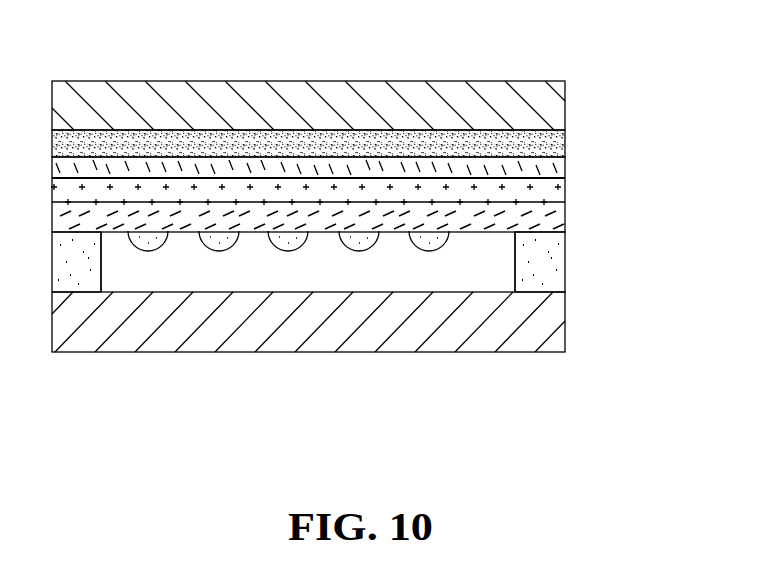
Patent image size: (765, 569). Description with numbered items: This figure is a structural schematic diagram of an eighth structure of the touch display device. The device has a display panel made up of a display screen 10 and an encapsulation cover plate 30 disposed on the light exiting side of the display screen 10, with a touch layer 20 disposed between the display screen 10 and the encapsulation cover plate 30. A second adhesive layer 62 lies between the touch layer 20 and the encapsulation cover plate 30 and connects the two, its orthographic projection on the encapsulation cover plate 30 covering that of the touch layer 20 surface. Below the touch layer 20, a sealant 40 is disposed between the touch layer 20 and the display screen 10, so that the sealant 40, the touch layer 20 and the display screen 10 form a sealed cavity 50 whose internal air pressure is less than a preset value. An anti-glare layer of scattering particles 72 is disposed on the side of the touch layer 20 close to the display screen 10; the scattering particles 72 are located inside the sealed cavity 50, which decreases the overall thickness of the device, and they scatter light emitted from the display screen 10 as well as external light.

The display screen 10 is at (538, 325).
The touch layer 20 is at (584, 193).
The encapsulation cover plate 30 is at (538, 102).
The sealant 40 is at (535, 258).
The sealed cavity 50 is at (100, 256).
The second adhesive layer 62 is at (358, 145).
The scattering particles 72 is at (288, 238).